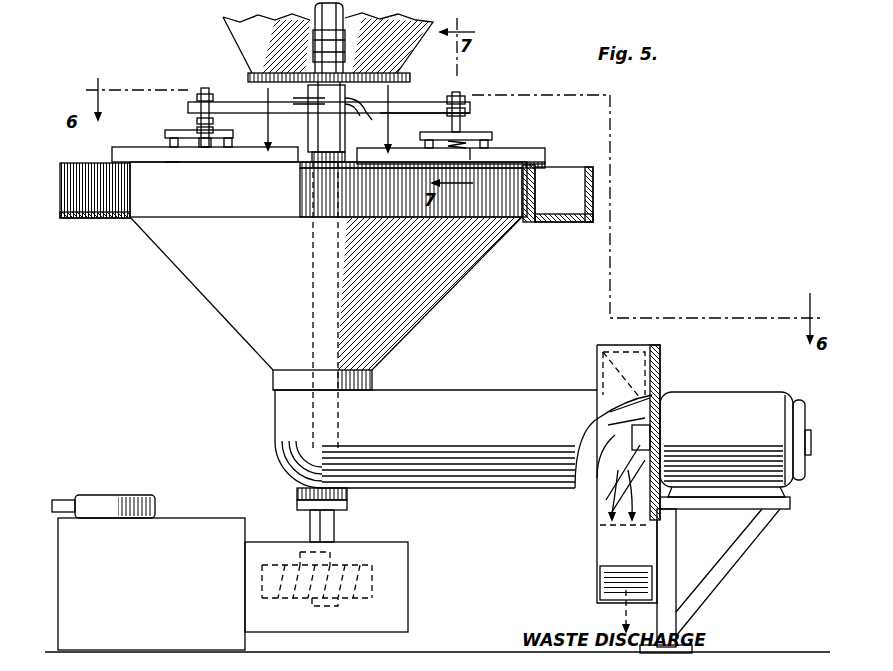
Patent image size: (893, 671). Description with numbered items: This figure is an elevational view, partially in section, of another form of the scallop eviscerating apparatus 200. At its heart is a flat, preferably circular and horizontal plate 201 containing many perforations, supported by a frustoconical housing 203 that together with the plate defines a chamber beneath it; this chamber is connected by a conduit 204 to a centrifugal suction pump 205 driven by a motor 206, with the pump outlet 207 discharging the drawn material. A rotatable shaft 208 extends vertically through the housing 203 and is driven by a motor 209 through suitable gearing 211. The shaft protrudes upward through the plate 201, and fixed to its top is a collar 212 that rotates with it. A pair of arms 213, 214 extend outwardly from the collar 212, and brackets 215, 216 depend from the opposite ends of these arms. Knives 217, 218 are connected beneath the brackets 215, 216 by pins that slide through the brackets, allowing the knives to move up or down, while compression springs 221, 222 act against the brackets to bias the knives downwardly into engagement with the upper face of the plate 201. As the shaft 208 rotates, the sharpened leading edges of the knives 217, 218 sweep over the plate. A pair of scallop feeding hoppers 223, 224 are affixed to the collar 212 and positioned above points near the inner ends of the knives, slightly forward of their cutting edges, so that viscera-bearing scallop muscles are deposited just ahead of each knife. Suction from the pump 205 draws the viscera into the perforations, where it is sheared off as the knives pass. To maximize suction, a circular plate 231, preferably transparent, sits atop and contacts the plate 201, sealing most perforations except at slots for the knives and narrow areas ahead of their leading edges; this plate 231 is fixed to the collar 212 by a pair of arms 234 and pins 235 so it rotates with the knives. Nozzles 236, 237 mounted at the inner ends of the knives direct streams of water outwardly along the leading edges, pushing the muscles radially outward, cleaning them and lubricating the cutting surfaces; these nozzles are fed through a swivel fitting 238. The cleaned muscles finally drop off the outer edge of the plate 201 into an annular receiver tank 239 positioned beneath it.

The apparatus 200 is at (222, 328).
The flat plate 201 is at (170, 164).
The frustoconical housing 203 is at (447, 292).
The conduit 204 is at (470, 390).
The centrifugal suction pump 205 is at (600, 518).
The motor 206 is at (720, 398).
The pump outlet 207 is at (600, 568).
The rotatable shaft 208 is at (336, 512).
The motor 209 is at (196, 526).
The gearing 211 is at (396, 604).
The collar 212 is at (338, 162).
The arm 213 is at (258, 102).
The arm 214 is at (425, 108).
The bracket 215 is at (198, 120).
The bracket 216 is at (470, 133).
The knife 217 is at (114, 153).
The knife 218 is at (547, 156).
The compression spring 221 is at (168, 134).
The compression spring 222 is at (470, 165).
The scallop feeding hopper 223 is at (250, 40).
The scallop feeding hopper 224 is at (400, 66).
The circular plate 231 is at (216, 160).
The arm 234 is at (466, 128).
The pin 235 is at (337, 192).
The nozzle 236 is at (287, 135).
The nozzle 237 is at (379, 131).
The swivel fitting 238 is at (346, 34).
The annular receiver tank 239 is at (90, 220).